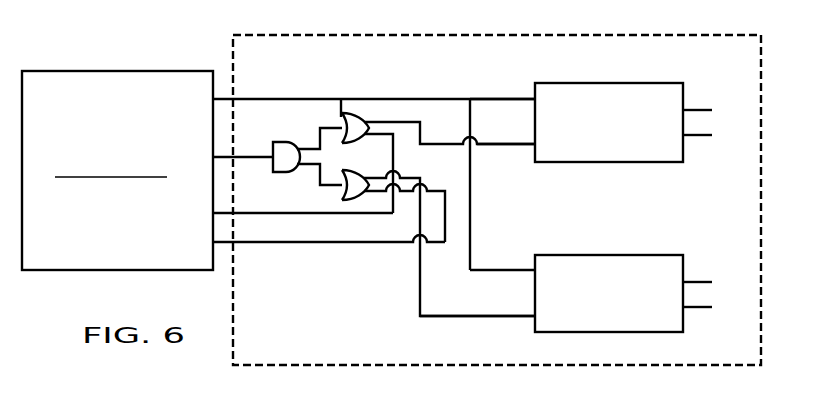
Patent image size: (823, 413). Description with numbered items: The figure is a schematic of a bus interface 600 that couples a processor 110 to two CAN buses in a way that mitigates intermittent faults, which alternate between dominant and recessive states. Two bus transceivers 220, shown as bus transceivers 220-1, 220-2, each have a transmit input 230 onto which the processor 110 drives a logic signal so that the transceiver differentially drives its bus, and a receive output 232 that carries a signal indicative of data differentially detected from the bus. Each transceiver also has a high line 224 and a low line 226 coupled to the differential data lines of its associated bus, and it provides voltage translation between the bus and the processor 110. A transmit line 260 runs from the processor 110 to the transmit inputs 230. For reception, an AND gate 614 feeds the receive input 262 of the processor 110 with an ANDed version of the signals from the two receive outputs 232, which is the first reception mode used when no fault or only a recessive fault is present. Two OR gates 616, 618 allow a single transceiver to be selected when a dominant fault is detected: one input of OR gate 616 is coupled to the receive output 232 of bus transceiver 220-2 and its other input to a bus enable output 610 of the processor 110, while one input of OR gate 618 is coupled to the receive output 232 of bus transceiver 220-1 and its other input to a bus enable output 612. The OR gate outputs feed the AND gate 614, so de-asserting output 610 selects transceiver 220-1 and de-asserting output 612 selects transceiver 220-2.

The bus interface 600 is at (446, 23).
The processor 110 is at (117, 71).
The transmit (TX) line 260 is at (271, 99).
The receive input 262 is at (230, 157).
The AND gate 614 is at (275, 143).
The OR gate 616 is at (345, 113).
The OR gate 618 is at (348, 195).
The bus enable output 610 is at (227, 213).
The bus enable output 612 is at (243, 243).
The bus transceiver 220 is at (616, 202).
The bus transceiver 220-1 is at (611, 333).
The bus transceiver 220-2 is at (611, 163).
The transmit input 230 is at (506, 99).
The receive output 232 is at (506, 146).
The high line 224 is at (699, 110).
The low line 226 is at (699, 135).